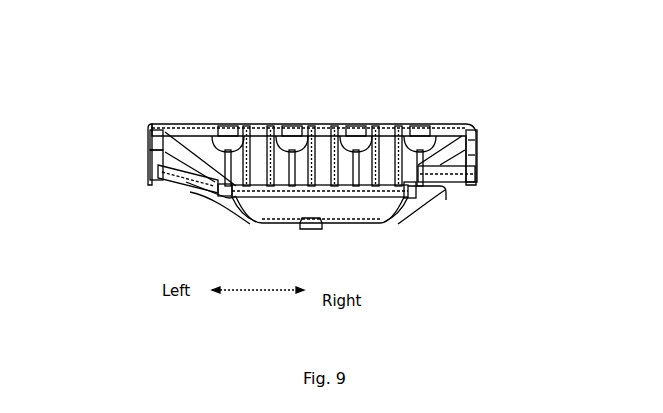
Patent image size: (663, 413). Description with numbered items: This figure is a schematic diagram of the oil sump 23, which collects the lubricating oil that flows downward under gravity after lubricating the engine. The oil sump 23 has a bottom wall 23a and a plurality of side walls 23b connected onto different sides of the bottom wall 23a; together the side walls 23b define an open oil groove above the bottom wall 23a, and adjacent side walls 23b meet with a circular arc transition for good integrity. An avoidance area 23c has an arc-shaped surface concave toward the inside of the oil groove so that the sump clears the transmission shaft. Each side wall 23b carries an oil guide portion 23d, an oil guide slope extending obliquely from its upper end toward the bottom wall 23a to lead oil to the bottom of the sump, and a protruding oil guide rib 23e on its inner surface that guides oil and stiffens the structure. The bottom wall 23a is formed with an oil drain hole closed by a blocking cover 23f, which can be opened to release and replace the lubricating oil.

The oil sump 23 is at (292, 59).
The bottom wall 23a is at (356, 223).
The side walls 23b is at (186, 190).
The avoidance area 23c is at (238, 216).
The oil guide portion 23d is at (162, 170).
The oil guide rib 23e is at (260, 127).
The blocking cover 23f is at (314, 230).